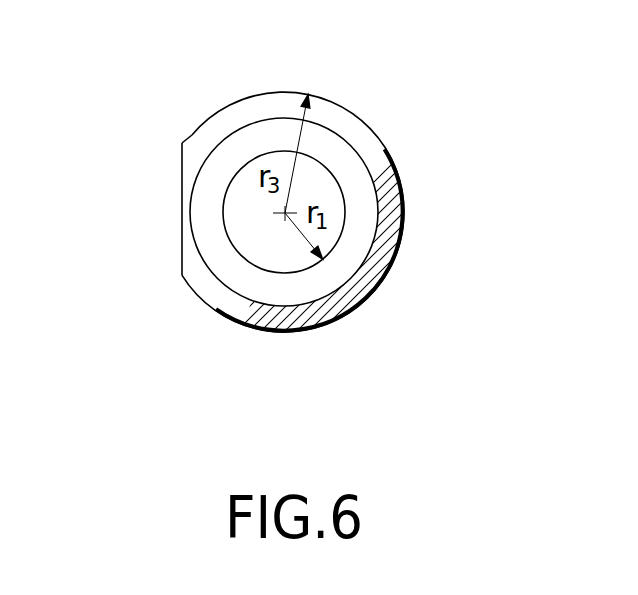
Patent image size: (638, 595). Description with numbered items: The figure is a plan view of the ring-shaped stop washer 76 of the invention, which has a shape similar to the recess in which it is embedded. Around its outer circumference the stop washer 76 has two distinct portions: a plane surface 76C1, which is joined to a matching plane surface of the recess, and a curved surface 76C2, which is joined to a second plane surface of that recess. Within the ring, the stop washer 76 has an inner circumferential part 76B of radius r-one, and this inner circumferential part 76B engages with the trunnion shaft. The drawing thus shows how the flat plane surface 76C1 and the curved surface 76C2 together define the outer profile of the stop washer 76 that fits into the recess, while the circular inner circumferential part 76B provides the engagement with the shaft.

The stop washer 76 is at (396, 150).
The inner circumferential part 76B is at (251, 258).
The plane surface 76C1 is at (182, 233).
The curved surface 76C2 is at (188, 131).